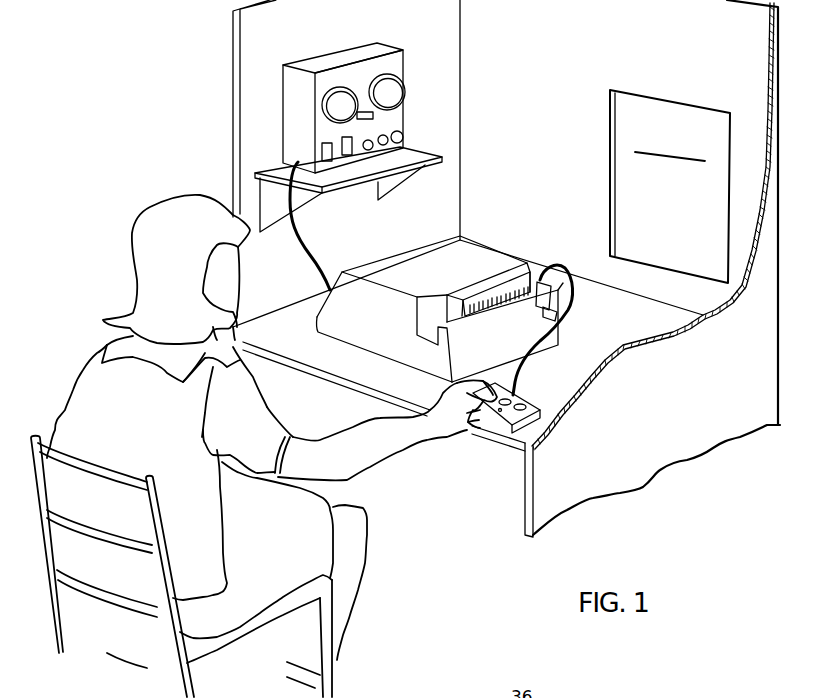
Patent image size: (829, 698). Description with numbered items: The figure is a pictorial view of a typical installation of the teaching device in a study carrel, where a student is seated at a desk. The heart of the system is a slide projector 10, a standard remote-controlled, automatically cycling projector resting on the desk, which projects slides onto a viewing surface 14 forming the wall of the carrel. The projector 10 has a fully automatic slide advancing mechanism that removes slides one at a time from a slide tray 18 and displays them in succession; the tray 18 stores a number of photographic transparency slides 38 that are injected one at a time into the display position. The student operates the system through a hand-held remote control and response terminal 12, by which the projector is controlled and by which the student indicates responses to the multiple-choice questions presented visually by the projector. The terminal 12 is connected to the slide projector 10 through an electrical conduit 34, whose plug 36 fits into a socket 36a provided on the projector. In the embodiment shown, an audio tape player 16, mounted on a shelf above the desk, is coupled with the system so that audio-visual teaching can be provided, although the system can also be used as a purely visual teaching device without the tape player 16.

The slide projector 10 is at (398, 255).
The student's remote control and response terminal 12 is at (503, 425).
The viewing surface 14 is at (535, 45).
The audio tape player 16 is at (403, 76).
The slide tray 18 is at (505, 308).
The electrical conduit 34 is at (575, 294).
The plug 36 is at (530, 266).
The socket 36a is at (550, 322).
The photographic transparency slides 38 is at (485, 305).